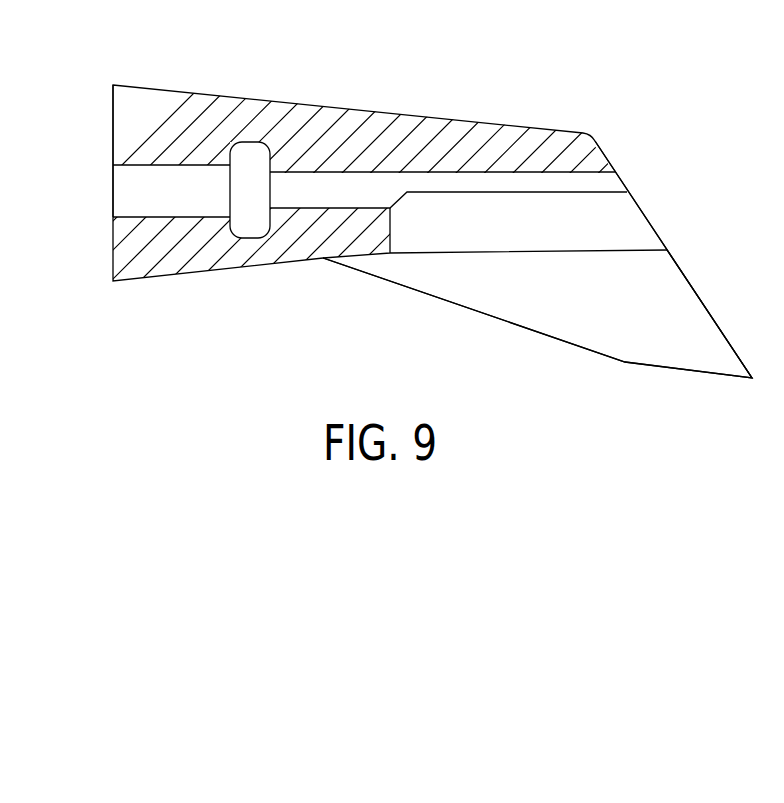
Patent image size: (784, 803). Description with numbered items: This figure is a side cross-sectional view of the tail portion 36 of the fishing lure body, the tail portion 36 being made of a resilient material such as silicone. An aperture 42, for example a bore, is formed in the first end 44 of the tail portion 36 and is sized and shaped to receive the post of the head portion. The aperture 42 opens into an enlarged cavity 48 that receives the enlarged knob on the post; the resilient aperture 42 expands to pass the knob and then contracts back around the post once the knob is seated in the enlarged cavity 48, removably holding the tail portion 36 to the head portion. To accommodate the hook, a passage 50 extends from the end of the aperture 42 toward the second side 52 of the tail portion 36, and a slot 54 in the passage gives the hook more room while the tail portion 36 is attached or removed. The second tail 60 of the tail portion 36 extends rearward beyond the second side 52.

The tail portion 36 is at (612, 106).
The aperture 42 is at (108, 208).
The first end 44 is at (84, 166).
The enlarged cavity 48 is at (250, 219).
The passage 50 is at (375, 191).
The second side 52 is at (680, 179).
The slot 54 is at (476, 226).
The second tail 60 is at (702, 342).